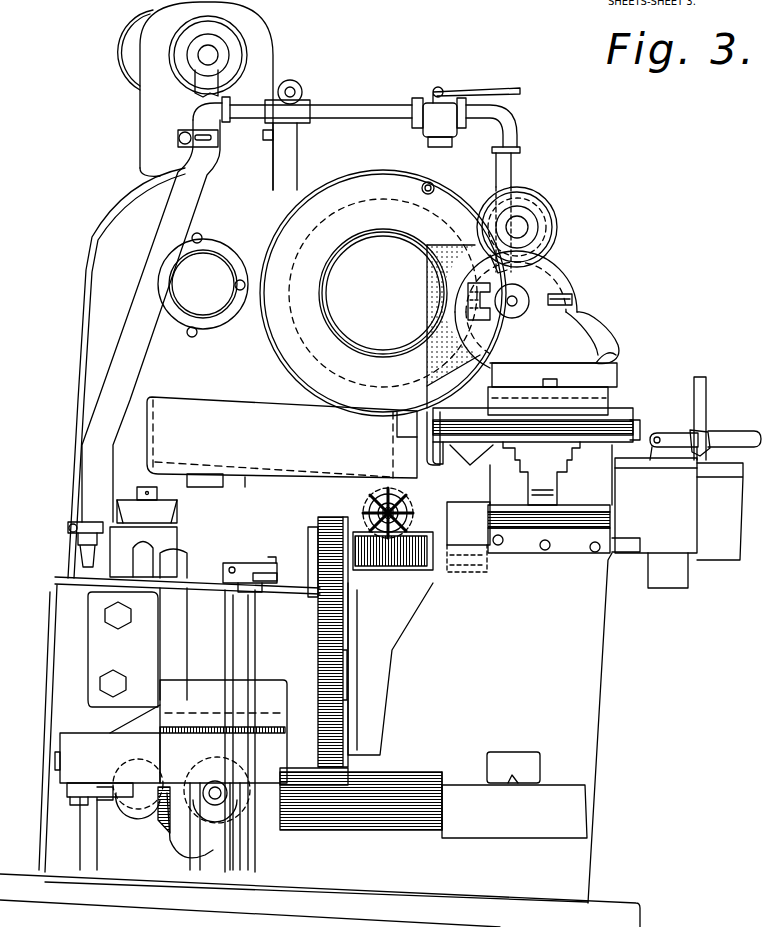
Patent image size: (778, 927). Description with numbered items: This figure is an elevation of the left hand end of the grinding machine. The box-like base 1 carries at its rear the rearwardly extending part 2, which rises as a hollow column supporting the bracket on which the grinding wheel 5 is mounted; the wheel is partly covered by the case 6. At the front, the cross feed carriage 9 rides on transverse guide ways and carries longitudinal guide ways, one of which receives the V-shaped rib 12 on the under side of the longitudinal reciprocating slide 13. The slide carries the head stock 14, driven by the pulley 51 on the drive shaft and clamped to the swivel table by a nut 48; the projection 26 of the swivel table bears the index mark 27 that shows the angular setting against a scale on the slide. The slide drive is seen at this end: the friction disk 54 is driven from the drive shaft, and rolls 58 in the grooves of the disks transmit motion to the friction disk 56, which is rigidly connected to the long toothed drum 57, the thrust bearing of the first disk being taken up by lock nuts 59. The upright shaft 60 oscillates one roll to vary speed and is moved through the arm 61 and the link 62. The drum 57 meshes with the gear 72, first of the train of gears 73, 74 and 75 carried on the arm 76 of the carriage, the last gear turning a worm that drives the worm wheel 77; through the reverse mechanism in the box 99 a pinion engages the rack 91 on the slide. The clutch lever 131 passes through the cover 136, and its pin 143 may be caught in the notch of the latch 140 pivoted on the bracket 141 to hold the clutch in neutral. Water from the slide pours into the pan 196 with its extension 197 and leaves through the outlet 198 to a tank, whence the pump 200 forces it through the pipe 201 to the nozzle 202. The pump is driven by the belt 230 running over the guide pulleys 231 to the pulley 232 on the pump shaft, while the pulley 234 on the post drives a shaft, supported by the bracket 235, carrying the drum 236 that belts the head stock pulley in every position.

The base 1 is at (585, 658).
The rearwardly extending part 2 is at (140, 144).
The grinding wheel 5 is at (440, 388).
The case 6 is at (368, 180).
The cross feed carriage 9 is at (543, 674).
The V-shaped rib 12 is at (536, 449).
The longitudinal reciprocating slide 13 is at (541, 473).
The head stock 14 is at (537, 309).
The projection 26 is at (540, 384).
The index mark 27 is at (560, 384).
The nut 48 is at (574, 300).
The pulley 51 is at (559, 220).
The friction disk 54 is at (182, 838).
The friction disk 56 is at (256, 848).
The toothed drum 57 is at (383, 822).
The rolls 58 is at (216, 822).
The lock nuts 59 is at (85, 800).
The upright shaft 60 is at (232, 655).
The arm 61 is at (252, 563).
The link 62 is at (278, 569).
The gear 72 is at (350, 768).
The gear 73 is at (338, 681).
The gear 74 is at (328, 631).
The gear 75 is at (326, 515).
The arm 76 is at (412, 530).
The worm wheel 77 is at (370, 500).
The rack 91 is at (528, 493).
The box 99 is at (720, 511).
The lever 131 is at (706, 399).
The cover 136 is at (662, 468).
The latch 140 is at (737, 433).
The bracket 141 is at (659, 431).
The pin 143 is at (705, 435).
The pan 196 is at (208, 405).
The extension 197 is at (393, 438).
The outlet 198 is at (216, 490).
The pump 200 is at (170, 538).
The pipe 201 is at (200, 206).
The nozzle 202 is at (508, 155).
The belt 230 is at (83, 520).
The guide pulleys 231 is at (177, 519).
The pulley 232 is at (137, 495).
The pulley 234 is at (117, 66).
The bracket 235 is at (160, 645).
The drum 236 is at (240, 35).